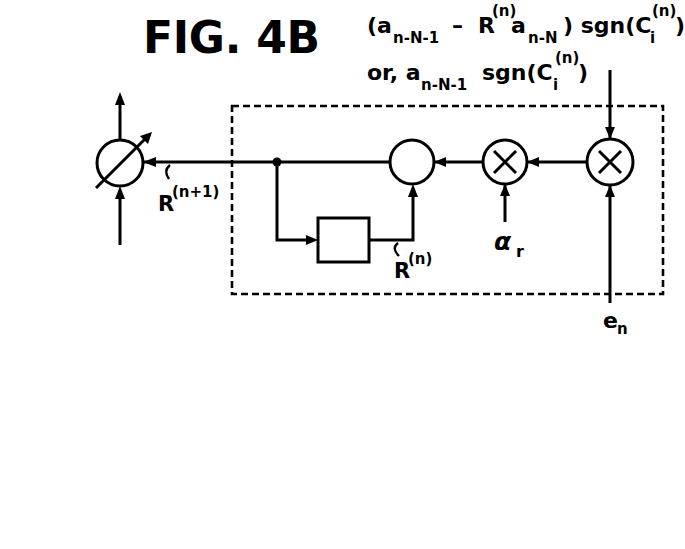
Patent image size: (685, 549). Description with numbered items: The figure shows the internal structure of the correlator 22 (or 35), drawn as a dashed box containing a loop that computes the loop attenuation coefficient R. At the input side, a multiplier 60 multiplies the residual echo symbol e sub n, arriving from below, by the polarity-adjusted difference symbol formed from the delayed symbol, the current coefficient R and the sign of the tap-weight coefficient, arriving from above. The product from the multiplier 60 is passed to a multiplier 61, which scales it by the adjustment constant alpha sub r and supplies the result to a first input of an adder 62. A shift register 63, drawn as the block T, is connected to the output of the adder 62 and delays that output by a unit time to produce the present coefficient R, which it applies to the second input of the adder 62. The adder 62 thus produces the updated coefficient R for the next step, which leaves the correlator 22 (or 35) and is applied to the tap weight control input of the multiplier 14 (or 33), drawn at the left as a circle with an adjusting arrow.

The multiplier 14 is at (95, 165).
The variable gain element (tap coefficient multiplier) 33 is at (99, 150).
The correlator 22 is at (445, 228).
The correlator 35 is at (312, 297).
The multiplier 60 is at (597, 181).
The multiplier 61 is at (494, 181).
The adder 62 is at (430, 144).
The shift register 63 is at (328, 217).